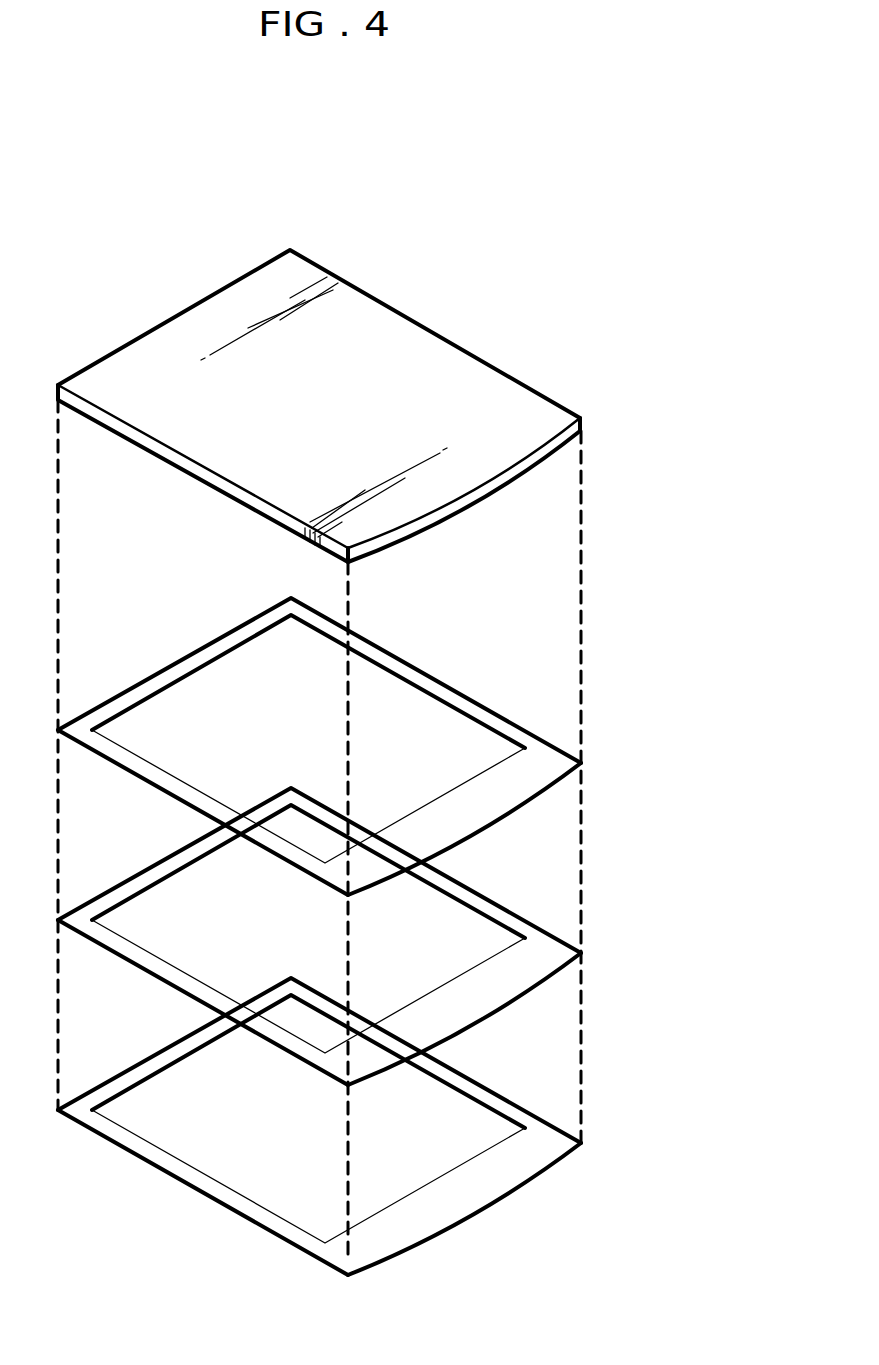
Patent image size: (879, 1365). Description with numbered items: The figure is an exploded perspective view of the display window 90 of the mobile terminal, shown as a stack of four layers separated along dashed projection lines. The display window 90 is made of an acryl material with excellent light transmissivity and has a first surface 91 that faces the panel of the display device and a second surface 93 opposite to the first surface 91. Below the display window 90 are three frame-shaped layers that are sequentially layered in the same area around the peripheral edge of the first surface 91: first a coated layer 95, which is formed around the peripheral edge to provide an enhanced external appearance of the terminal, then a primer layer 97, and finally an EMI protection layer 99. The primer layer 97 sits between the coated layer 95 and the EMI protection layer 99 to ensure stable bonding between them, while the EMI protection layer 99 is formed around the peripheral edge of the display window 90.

The display window 90 is at (316, 406).
The second surface 93 is at (111, 373).
The first surface 91 is at (133, 443).
The coated layer 95 is at (497, 722).
The primer layer 97 is at (497, 912).
The EMI protection layer 99 is at (497, 1101).